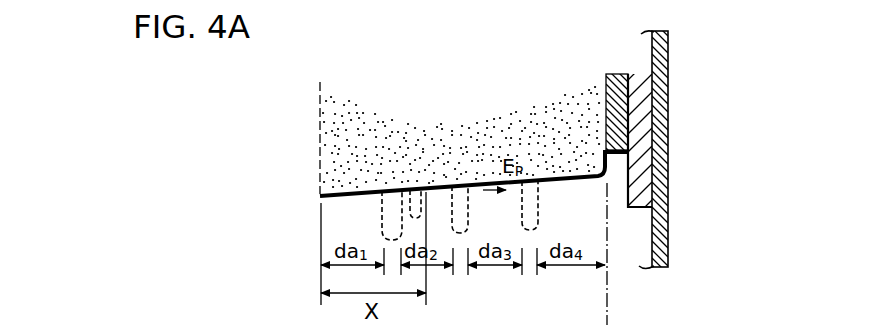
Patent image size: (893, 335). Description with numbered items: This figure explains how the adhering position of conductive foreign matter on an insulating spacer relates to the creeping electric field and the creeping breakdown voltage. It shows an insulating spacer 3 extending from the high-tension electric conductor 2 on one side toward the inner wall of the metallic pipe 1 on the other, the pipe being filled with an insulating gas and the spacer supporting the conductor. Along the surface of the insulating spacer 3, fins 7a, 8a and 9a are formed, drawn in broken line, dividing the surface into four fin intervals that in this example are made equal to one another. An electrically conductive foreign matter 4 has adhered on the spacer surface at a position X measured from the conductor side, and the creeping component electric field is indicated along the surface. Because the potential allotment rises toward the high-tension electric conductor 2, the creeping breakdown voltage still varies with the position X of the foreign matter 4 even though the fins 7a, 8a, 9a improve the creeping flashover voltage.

The metallic pipe 1 is at (669, 91).
The high-tension electric conductor 2 is at (320, 111).
The insulating spacer 3 is at (374, 122).
The foreign matter 4 is at (474, 193).
The fin 7a is at (382, 214).
The fin 8a is at (469, 197).
The fin 9a is at (539, 197).